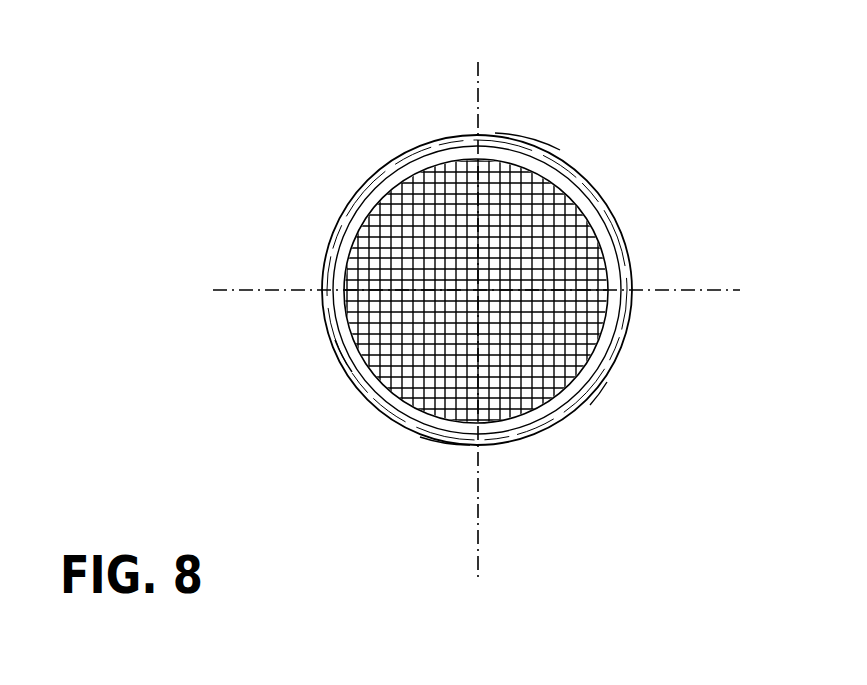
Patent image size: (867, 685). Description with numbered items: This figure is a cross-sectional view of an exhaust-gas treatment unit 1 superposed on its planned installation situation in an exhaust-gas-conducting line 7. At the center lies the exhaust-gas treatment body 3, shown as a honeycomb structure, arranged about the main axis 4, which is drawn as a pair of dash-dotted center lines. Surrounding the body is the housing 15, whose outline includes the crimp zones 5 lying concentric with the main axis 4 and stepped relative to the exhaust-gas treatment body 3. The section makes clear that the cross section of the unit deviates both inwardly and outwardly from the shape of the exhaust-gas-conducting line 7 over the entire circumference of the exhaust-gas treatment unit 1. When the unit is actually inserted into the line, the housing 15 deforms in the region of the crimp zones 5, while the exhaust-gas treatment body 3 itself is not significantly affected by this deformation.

The exhaust-gas treatment unit 1 is at (418, 90).
The exhaust-gas treatment body 3 is at (560, 256).
The main axis 4 is at (213, 288).
The crimp zone 5 is at (497, 133).
The exhaust-gas-conducting line 7 is at (440, 442).
The housing 15 is at (380, 185).